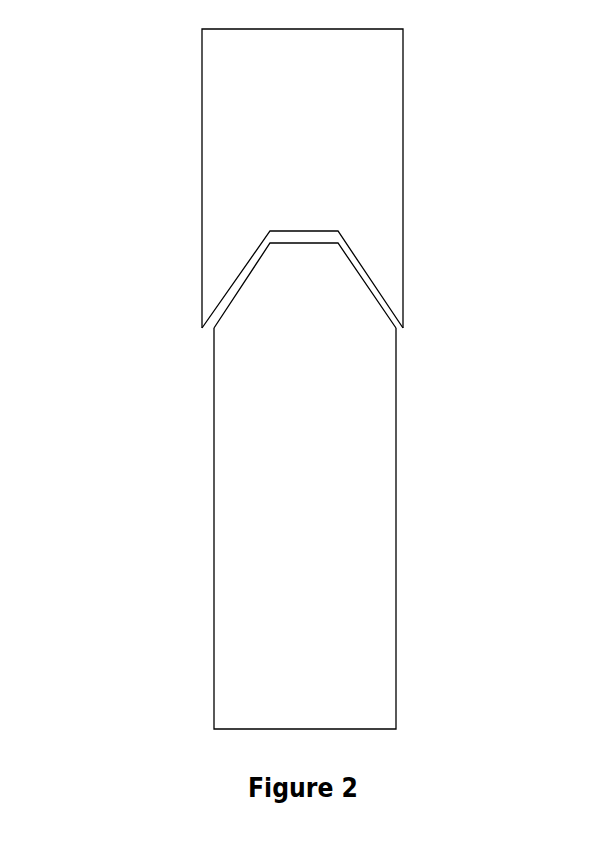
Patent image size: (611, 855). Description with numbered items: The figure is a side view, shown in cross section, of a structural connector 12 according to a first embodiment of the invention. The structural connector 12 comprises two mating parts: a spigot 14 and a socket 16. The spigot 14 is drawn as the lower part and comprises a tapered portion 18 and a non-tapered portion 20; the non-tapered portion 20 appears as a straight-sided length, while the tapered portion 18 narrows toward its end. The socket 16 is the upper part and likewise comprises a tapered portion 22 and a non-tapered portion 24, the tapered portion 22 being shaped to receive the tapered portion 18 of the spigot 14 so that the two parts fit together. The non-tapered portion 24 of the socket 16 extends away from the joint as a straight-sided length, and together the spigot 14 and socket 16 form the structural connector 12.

The structural connector 12 is at (479, 375).
The spigot 14 is at (396, 548).
The socket 16 is at (403, 132).
The tapered portion 18 is at (240, 290).
The non-tapered portion 20 is at (260, 493).
The tapered portion 22 is at (357, 257).
The non-tapered portion 24 is at (227, 164).